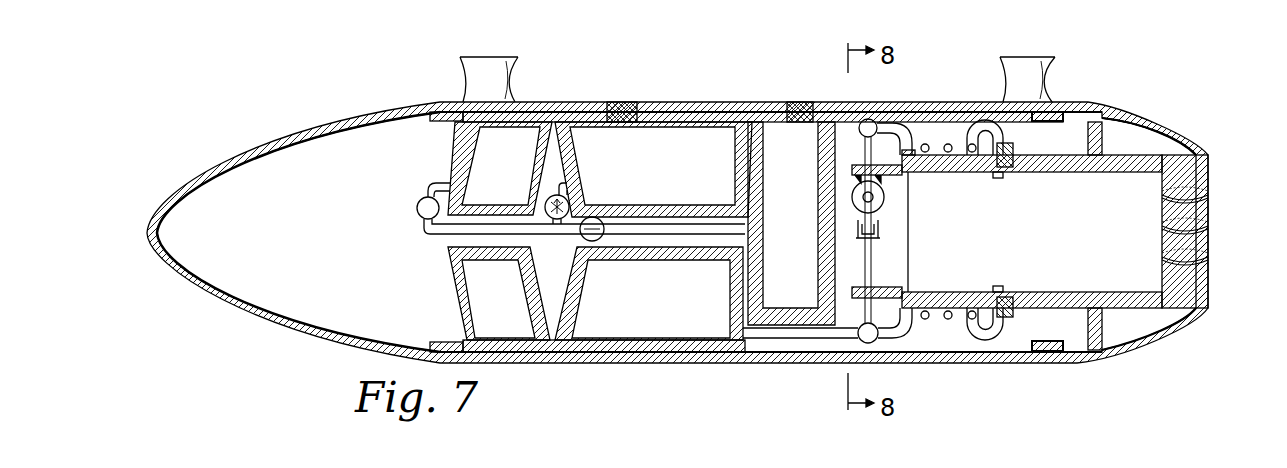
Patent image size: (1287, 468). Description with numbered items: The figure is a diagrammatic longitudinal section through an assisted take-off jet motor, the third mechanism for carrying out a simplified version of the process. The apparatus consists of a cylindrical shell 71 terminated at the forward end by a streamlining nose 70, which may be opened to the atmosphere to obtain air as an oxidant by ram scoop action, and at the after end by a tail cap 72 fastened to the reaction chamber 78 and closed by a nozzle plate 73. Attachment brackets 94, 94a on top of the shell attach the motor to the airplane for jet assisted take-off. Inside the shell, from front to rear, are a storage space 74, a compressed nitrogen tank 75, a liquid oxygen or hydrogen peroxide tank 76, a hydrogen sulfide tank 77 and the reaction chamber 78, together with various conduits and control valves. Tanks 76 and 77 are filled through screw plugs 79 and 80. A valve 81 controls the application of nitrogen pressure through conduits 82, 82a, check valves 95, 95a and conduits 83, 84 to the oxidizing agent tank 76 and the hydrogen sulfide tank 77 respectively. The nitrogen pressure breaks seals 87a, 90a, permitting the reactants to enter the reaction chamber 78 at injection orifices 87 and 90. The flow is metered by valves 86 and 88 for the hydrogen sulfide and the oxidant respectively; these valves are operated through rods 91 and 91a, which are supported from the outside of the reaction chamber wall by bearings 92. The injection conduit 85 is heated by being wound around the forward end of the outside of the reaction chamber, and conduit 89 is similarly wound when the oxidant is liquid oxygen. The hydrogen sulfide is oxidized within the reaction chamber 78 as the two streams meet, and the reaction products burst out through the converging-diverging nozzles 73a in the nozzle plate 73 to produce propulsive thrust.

The nose 70 is at (245, 153).
The cylindrical shell 71 is at (488, 360).
The tail cap 72 is at (1088, 103).
The nozzle plate 73 is at (1203, 281).
The converging-diverging nozzles 73a is at (1208, 198).
The storage space 74 is at (253, 293).
The compressed nitrogen tank 75 is at (480, 297).
The liquid oxygen or hydrogen peroxide tank 76 is at (682, 332).
The hydrogen sulfide tank 77 is at (765, 272).
The reaction chamber 78 is at (1095, 283).
The screw plug 79 is at (625, 106).
The screw plug 80 is at (795, 106).
The valve 81 is at (417, 206).
The conduit 82 is at (443, 183).
The conduit 82a is at (438, 240).
The conduit 83 is at (557, 193).
The conduit 84 is at (720, 232).
The injection conduit 85 is at (899, 127).
The valve 86 is at (873, 118).
The injection orifice 87 is at (999, 297).
The seal 87a is at (995, 287).
The valve 88 is at (857, 343).
The conduit 89 is at (971, 135).
The injection orifice 90 is at (1015, 155).
The seal 90a is at (1000, 179).
The rod 91 is at (865, 254).
The rod 91a is at (884, 220).
The bearings 92 is at (889, 300).
The attachment bracket 94 is at (466, 70).
The attachment bracket 94a is at (1005, 84).
The check valve 95 is at (592, 247).
The check valve 95a is at (558, 223).